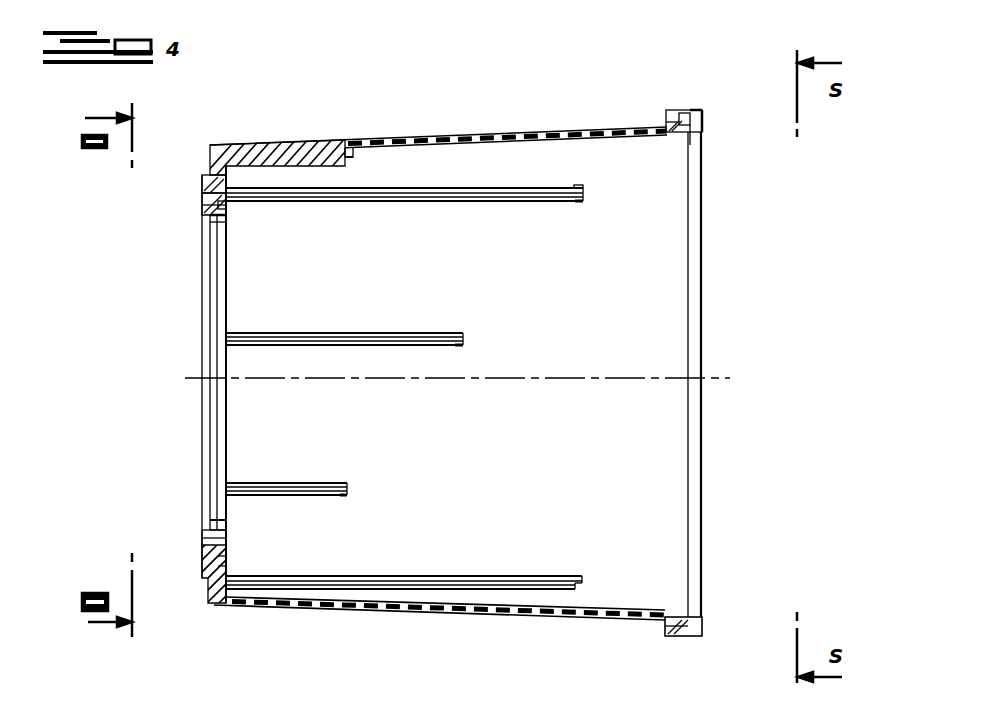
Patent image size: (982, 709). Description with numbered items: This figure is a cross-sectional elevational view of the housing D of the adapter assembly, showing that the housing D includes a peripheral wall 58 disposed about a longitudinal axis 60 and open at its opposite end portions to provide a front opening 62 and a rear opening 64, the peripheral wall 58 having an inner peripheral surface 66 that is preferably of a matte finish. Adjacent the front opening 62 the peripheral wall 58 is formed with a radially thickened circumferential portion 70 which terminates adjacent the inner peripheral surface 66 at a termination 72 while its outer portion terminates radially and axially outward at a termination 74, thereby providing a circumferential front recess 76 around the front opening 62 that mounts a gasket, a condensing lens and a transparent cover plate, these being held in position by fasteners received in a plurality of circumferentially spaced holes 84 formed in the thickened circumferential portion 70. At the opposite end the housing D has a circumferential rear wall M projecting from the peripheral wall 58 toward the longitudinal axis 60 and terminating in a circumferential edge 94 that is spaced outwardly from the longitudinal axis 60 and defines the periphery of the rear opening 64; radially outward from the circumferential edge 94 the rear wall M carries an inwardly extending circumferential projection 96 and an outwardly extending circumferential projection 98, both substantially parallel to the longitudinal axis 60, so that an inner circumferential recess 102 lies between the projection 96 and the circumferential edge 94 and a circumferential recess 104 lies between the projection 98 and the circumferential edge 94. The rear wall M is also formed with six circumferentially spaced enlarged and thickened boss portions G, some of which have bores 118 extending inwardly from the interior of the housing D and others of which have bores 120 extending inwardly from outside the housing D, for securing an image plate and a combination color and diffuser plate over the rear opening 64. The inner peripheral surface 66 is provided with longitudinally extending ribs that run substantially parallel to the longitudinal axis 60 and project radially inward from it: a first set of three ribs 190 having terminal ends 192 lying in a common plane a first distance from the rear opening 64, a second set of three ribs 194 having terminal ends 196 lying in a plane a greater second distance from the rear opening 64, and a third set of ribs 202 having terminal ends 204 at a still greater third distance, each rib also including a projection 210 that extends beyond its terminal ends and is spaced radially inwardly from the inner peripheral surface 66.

The peripheral wall 58 is at (428, 138).
The longitudinal axis 60 is at (640, 378).
The front opening 62 is at (688, 264).
The rear opening 64 is at (202, 352).
The inner peripheral surface 66 is at (505, 145).
The radially thickened circumferential portion 70 is at (668, 124).
The termination 72 is at (688, 135).
The termination 74 is at (700, 112).
The circumferential front recess 76 is at (703, 128).
The circumferentially spaced holes 84 is at (680, 112).
The circumferential edge 94 is at (216, 528).
The inwardly extending circumferential projection 96 is at (226, 218).
The outwardly extending circumferential projection 98 is at (205, 216).
The inner circumferential recess 102 is at (226, 230).
The circumferential recess 104 is at (210, 228).
The bores 118 is at (228, 206).
The bores 120 is at (204, 538).
The first set of ribs 190 is at (332, 143).
The terminal ends 192 is at (354, 153).
The second set of ribs 194 is at (367, 333).
The terminal ends 196 is at (462, 333).
The third set of ribs 202 is at (509, 196).
The terminal ends 204 is at (580, 186).
The projection 210 is at (585, 201).
The housing D is at (554, 124).
The boss portions G is at (194, 175).
The circumferential rear wall M is at (180, 206).